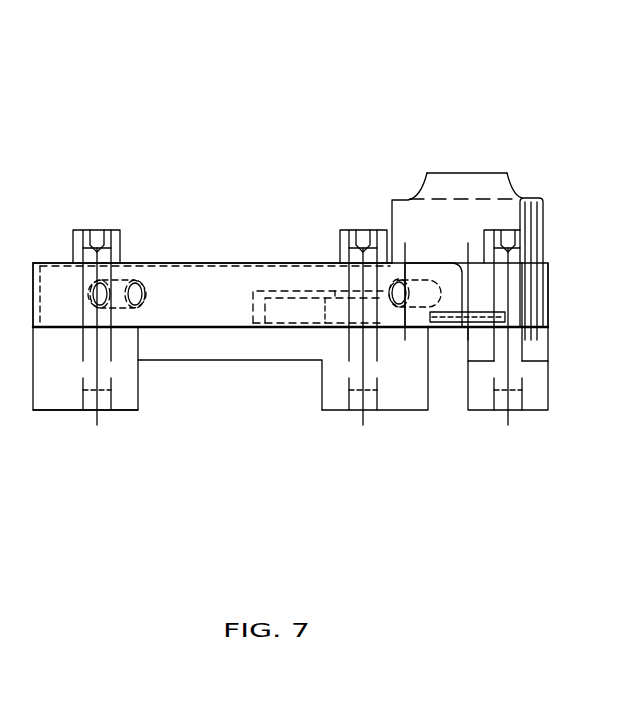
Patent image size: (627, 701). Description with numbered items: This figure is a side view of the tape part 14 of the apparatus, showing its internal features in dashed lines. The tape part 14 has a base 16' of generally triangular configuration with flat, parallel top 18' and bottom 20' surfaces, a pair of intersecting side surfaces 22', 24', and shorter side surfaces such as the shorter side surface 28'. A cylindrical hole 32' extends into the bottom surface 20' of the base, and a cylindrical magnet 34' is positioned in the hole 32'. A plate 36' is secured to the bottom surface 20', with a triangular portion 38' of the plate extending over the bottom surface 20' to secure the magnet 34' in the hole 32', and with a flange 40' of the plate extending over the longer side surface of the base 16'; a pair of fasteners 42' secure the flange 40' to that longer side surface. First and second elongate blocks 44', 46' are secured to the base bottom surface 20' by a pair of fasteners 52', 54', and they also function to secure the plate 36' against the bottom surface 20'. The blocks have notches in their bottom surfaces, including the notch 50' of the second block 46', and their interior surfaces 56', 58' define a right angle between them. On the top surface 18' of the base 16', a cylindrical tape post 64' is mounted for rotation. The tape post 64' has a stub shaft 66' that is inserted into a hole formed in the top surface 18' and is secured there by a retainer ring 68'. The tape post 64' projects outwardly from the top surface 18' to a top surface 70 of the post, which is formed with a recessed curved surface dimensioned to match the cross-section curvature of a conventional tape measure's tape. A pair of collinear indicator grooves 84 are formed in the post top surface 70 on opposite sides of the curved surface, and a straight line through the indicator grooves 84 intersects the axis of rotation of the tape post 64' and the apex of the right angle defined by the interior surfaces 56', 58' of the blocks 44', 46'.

The tape part 14 is at (254, 180).
The base 16' is at (212, 175).
The top surface 18' is at (215, 191).
The shorter side surface 28' is at (53, 219).
The flange 40' is at (71, 235).
The fasteners 42' is at (264, 219).
The fastener 54' is at (296, 217).
The side surface 22' is at (518, 295).
The plate 36' is at (230, 398).
The second elongate block 46' is at (82, 428).
The interior surface 58' is at (85, 446).
The bottom surface 20' is at (230, 439).
The side surface 24' is at (227, 411).
The notch 50' is at (361, 444).
The interior surface 56' is at (501, 416).
The first elongate block 44' is at (540, 425).
The triangular portion 38' is at (302, 353).
The cylindrical hole 32' is at (310, 394).
The cylindrical magnet 34' is at (319, 366).
The top surface of the tape post 70 is at (427, 173).
The indicator grooves 84 is at (467, 164).
The tape post 64' is at (489, 234).
The fastener 52' is at (564, 268).
The stub shaft 66' is at (506, 291).
The retainer ring 68' is at (519, 300).